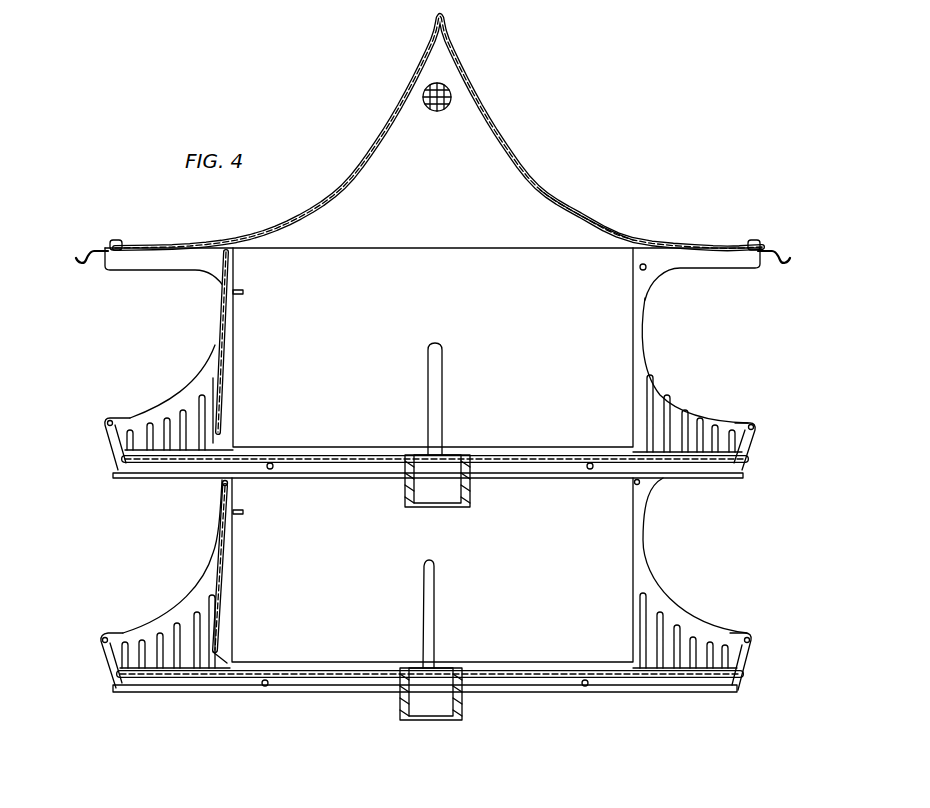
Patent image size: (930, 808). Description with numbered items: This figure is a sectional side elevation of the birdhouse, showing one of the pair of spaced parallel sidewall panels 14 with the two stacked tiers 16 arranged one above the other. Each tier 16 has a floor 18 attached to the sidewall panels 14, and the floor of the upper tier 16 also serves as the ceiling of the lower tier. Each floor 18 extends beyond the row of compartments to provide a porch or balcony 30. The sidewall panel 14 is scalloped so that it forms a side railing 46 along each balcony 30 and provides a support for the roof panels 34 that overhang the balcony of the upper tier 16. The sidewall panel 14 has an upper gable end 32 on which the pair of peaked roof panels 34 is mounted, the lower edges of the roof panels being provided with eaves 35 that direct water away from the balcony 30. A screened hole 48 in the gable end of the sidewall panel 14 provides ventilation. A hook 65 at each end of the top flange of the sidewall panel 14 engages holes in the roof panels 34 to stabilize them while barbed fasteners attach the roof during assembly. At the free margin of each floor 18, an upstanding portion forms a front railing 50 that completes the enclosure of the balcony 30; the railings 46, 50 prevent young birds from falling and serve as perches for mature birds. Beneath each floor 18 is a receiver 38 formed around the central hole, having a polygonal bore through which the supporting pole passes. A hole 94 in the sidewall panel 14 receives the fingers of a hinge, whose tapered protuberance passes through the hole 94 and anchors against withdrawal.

The sidewall panel 14 is at (438, 212).
The tier 16 is at (712, 603).
The floor 18 is at (303, 470).
The balcony 30 is at (167, 472).
The upper gable end 32 is at (463, 147).
The roof panel 34 is at (579, 207).
The eave 35 is at (85, 250).
The receiver 38 is at (462, 712).
The side railing 46 is at (131, 417).
The screened hole 48 is at (452, 78).
The front railing 50 is at (108, 445).
The hook 65 is at (118, 240).
The hole 94 is at (645, 270).